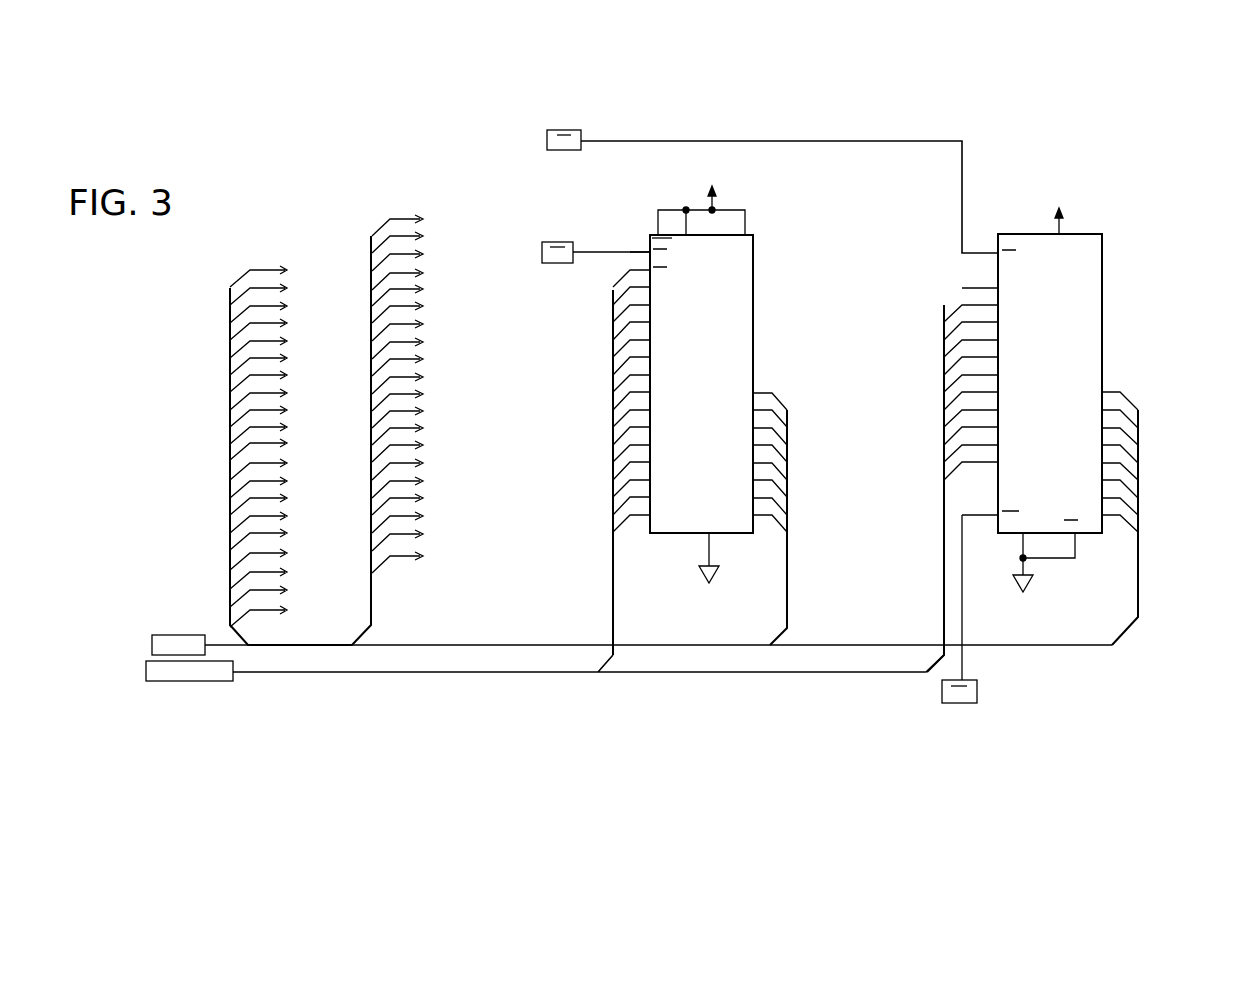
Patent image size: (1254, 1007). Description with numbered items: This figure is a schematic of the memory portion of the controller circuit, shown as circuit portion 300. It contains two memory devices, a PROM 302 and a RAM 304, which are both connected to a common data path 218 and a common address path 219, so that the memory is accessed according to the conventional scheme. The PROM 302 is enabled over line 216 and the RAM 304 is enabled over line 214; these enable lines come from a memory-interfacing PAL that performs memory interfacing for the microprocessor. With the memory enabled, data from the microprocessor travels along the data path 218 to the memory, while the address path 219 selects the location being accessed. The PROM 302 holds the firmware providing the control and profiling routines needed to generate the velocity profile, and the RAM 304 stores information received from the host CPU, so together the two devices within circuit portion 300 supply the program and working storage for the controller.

The circuit portion 300 is at (375, 123).
The enable line 214 is at (700, 141).
The enable line 216 is at (596, 252).
The PROM 302 is at (754, 258).
The RAM 304 is at (1103, 260).
The data path 218 is at (1140, 598).
The address path 219 is at (840, 674).